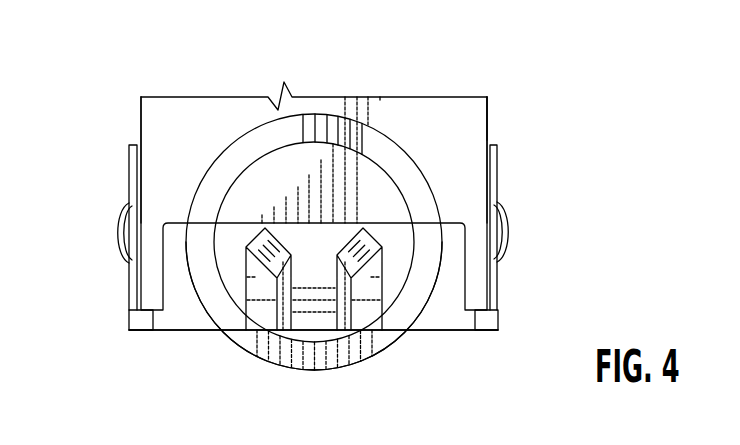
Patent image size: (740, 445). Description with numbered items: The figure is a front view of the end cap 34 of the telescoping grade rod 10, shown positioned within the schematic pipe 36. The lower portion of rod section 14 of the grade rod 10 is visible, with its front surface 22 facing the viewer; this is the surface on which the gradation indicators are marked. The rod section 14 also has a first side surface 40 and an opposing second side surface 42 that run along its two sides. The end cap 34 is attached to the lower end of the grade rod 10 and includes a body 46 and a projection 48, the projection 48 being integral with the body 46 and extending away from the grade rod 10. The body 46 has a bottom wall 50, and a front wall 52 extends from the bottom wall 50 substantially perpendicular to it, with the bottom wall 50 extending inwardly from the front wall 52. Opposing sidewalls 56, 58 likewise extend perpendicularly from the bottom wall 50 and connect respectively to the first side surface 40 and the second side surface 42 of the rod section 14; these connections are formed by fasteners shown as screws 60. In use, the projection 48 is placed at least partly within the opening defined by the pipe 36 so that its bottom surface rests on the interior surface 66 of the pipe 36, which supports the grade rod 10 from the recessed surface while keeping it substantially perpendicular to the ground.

The telescoping grade rod 10 is at (500, 110).
The rod section 14 is at (452, 93).
The front surface 22 is at (190, 110).
The end cap 34 is at (490, 346).
The schematic pipe 36 is at (228, 340).
The first side surface 40 is at (488, 128).
The second side surface 42 is at (140, 132).
The body 46 is at (500, 322).
The projection 48 is at (244, 287).
The bottom wall 50 is at (140, 320).
The front wall 52 is at (452, 237).
The sidewall 56 is at (498, 282).
The sidewall 58 is at (133, 272).
The screws 60 is at (113, 230).
The interior surface 66 is at (297, 341).